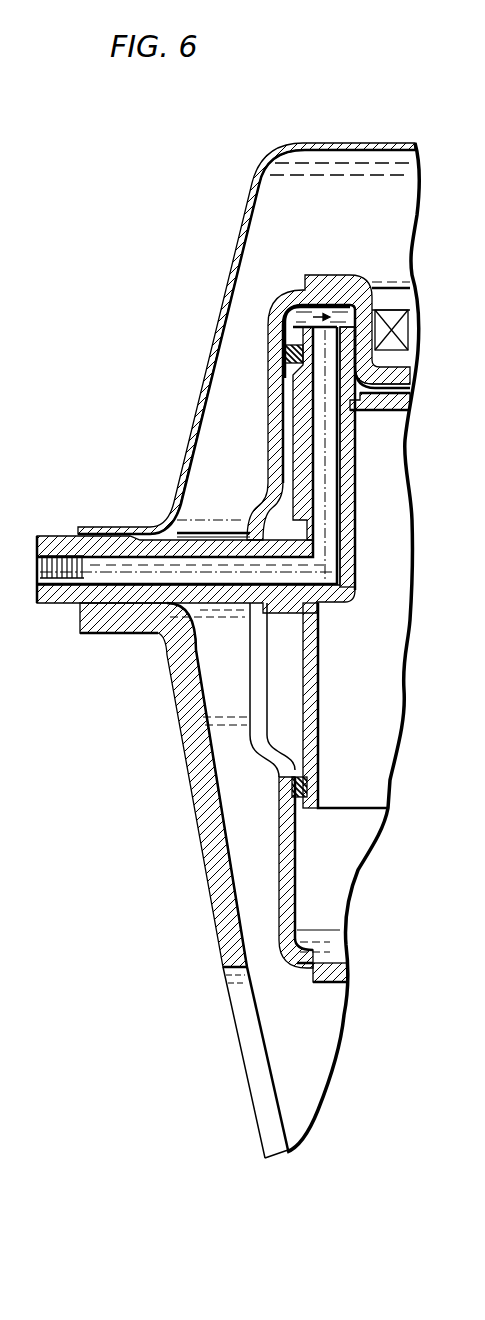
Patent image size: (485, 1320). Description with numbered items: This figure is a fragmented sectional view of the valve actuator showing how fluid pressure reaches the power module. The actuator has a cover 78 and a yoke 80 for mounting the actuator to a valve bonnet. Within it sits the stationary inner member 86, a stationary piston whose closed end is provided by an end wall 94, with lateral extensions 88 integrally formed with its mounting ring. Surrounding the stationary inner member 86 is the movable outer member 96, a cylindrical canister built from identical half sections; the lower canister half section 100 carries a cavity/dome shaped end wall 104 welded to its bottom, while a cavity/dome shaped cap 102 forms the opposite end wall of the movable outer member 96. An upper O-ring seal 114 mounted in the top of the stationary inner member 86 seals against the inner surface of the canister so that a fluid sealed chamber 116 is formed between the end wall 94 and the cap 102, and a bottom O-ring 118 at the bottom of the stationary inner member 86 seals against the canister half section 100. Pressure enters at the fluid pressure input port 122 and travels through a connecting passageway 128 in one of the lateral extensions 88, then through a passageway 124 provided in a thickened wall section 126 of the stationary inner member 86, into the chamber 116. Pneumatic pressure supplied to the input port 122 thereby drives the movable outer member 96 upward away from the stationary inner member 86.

The cover 78 is at (343, 143).
The yoke 80 is at (196, 833).
The stationary inner member 86 is at (303, 397).
The lateral extensions 88 is at (172, 617).
The end wall 94 is at (405, 405).
The movable outer member 96 is at (275, 885).
The canister half section 100 is at (297, 927).
The cavity/dome shaped cap 102 is at (405, 380).
The cavity/dome shaped end wall 104 is at (348, 1000).
The upper O-ring seal 114 is at (286, 357).
The fluid sealed chamber 116 is at (283, 305).
The bottom O-ring 118 is at (296, 787).
The fluid pressure input port 122 is at (37, 553).
The passageway 124 is at (330, 360).
The thickened wall section 126 is at (350, 458).
The connecting passageway 128 is at (170, 530).